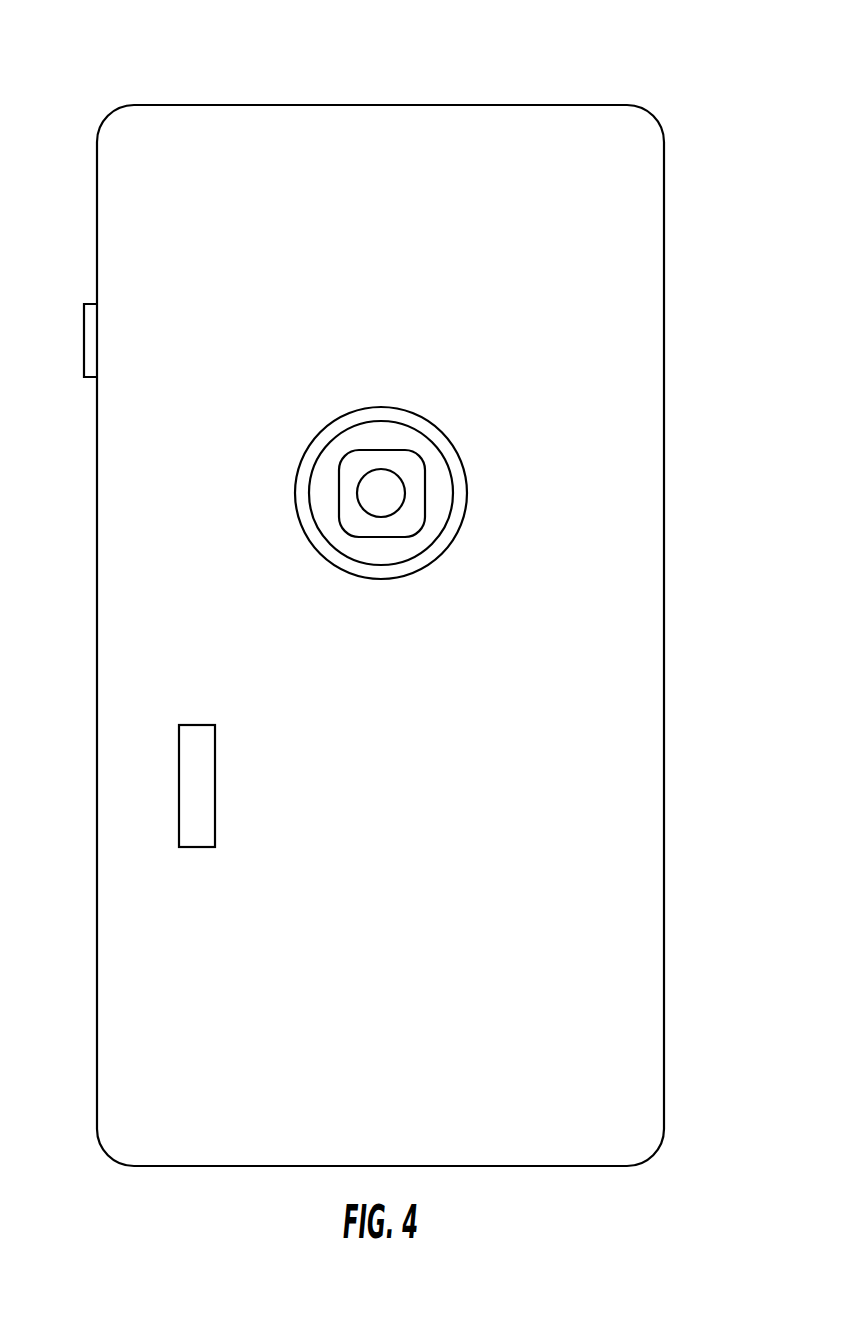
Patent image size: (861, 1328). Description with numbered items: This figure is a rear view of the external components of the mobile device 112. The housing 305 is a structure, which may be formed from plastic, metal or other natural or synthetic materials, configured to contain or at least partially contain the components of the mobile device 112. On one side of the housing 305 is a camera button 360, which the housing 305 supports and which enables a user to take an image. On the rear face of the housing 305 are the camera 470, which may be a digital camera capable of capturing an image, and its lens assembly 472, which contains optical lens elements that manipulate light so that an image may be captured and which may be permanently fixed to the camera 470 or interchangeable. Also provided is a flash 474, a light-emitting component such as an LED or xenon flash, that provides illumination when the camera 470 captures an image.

The mobile device 112 is at (166, 62).
The housing 305 is at (631, 760).
The camera button 360 is at (91, 334).
The camera 470 is at (441, 516).
The lens assembly 472 is at (404, 488).
The flash 474 is at (179, 765).